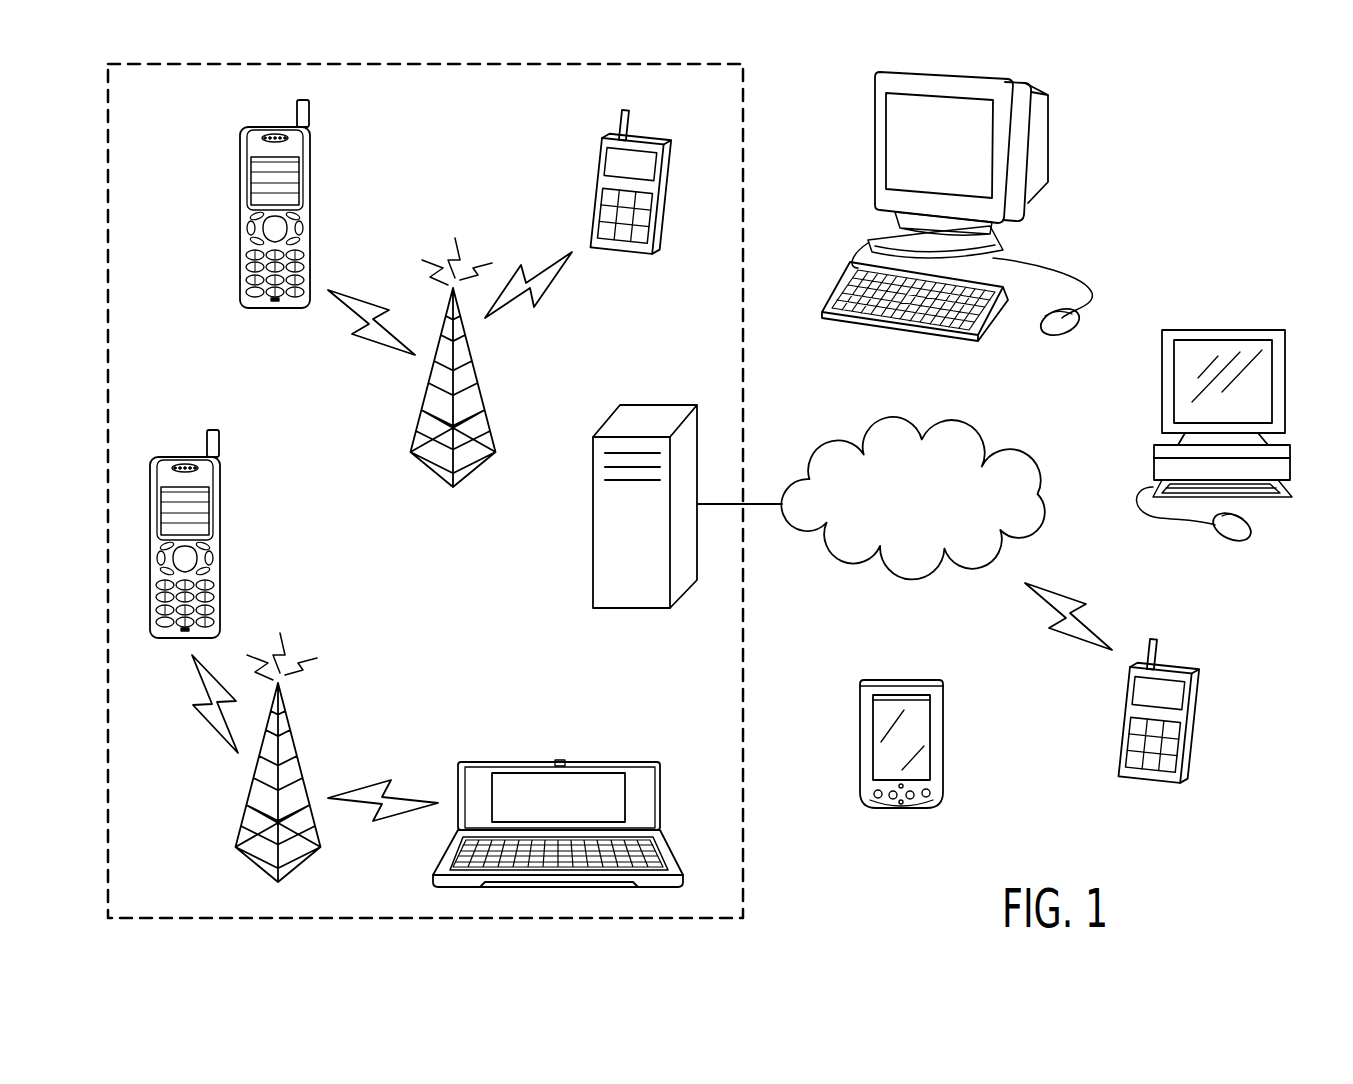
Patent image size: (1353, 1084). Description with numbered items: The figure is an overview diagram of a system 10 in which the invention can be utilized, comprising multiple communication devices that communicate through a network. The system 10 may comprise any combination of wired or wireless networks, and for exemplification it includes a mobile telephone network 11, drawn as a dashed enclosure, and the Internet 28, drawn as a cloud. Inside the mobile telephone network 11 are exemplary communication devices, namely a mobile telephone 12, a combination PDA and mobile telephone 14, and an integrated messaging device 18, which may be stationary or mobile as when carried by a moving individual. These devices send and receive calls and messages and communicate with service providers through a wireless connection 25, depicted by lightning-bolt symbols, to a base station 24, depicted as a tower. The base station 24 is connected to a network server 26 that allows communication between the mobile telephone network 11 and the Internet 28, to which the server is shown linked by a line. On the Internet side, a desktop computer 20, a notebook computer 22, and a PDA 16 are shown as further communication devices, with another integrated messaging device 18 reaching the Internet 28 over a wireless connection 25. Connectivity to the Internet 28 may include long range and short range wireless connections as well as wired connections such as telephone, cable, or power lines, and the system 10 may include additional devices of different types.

The system 10 is at (1273, 619).
The mobile telephone network 11 is at (155, 110).
The mobile telephone 12 is at (311, 215).
The combination PDA and mobile telephone 14 is at (560, 760).
The PDA 16 is at (944, 740).
The integrated messaging device 18 is at (597, 190).
The desktop computer 20 is at (1050, 135).
The notebook computer 22 is at (1222, 330).
The base station 24 is at (473, 370).
The wireless connection 25 is at (212, 732).
The network server 26 is at (593, 523).
The Internet 28 is at (960, 422).